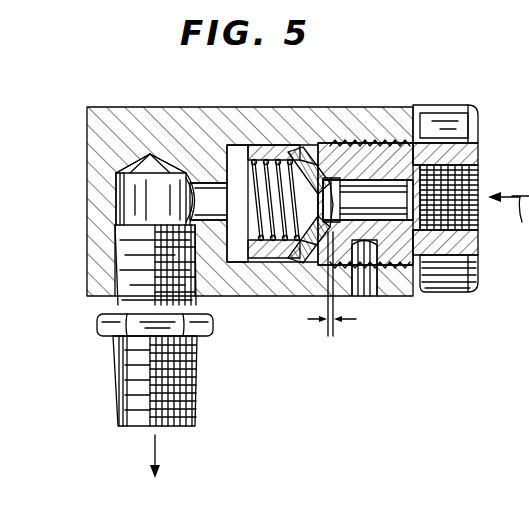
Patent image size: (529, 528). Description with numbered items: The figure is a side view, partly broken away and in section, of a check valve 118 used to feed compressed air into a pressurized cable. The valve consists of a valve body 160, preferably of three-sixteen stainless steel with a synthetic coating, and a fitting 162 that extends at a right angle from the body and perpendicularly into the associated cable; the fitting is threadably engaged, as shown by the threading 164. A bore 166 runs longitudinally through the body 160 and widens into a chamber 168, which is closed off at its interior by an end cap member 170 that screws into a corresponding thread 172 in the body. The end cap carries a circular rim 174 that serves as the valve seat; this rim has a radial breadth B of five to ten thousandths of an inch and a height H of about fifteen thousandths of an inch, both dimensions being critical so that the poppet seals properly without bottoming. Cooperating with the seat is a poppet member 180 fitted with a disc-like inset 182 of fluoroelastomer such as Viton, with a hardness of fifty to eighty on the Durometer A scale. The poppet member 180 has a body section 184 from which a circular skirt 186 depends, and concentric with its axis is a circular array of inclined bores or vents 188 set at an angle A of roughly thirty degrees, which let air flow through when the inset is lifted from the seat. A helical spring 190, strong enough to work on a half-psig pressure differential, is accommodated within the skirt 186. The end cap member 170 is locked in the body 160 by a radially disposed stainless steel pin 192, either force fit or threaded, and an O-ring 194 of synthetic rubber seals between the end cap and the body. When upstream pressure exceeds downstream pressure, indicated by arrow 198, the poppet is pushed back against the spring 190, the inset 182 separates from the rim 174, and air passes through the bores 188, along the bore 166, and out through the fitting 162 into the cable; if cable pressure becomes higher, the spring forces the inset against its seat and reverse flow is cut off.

The check valve 118 is at (176, 100).
The valve body 160 is at (103, 107).
The fitting 162 is at (112, 277).
The threading 164 is at (113, 248).
The bore 166 is at (201, 178).
The chamber 168 is at (223, 300).
The end cap member 170 is at (452, 118).
The thread 172 is at (377, 145).
The rim 174 is at (350, 210).
The poppet member 180 is at (323, 185).
The disc-like inset 182 is at (300, 264).
The body section 184 is at (241, 262).
The circular skirt 186 is at (296, 160).
The inclined bores or vents 188 is at (312, 145).
The helical spring 190 is at (238, 172).
The pin 192 is at (380, 268).
The O-ring 194 is at (432, 283).
The arrow 198 is at (162, 440).
The angle A is at (303, 143).
The radial breadth of rim B is at (364, 163).
The height of rim H is at (338, 324).